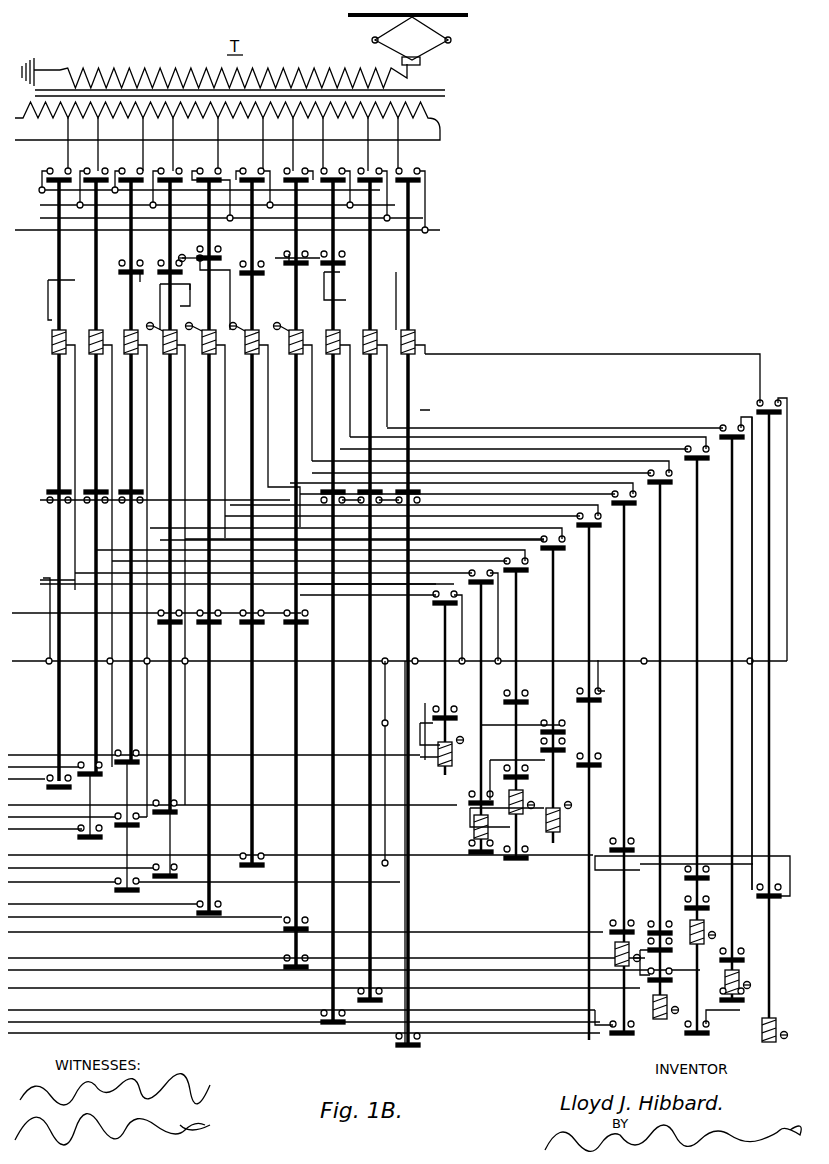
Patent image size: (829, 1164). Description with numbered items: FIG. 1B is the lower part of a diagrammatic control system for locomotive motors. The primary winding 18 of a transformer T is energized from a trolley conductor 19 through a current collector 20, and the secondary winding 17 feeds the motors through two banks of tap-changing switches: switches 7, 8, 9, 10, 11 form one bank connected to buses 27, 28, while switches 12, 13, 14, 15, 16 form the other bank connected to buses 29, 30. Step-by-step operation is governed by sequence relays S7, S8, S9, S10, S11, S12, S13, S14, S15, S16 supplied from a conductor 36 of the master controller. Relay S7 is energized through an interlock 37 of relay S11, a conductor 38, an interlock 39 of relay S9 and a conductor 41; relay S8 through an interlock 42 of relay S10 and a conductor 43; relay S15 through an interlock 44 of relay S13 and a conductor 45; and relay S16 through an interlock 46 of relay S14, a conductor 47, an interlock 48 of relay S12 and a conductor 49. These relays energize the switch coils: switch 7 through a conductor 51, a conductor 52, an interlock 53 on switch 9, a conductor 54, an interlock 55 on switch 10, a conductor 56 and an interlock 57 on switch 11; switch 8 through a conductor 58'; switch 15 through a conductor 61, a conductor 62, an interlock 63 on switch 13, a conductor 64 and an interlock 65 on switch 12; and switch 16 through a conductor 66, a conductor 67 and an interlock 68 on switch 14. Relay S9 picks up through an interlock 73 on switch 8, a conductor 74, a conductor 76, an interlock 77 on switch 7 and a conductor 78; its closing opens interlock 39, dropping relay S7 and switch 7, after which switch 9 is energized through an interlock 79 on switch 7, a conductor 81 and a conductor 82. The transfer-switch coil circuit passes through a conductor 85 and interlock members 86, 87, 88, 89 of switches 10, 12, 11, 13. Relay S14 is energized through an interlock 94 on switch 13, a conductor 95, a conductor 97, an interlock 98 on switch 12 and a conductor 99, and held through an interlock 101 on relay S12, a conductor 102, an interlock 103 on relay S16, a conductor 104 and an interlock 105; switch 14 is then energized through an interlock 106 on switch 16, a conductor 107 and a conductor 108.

The tap-changing switch 7 is at (44, 392).
The tap-changing switch 8 is at (90, 392).
The tap-changing switch 9 is at (126, 392).
The tap-changing switch 10 is at (166, 392).
The tap-changing switch 11 is at (250, 392).
The tap-changing switch 12 is at (205, 392).
The tap-changing switch 13 is at (294, 392).
The tap-changing switch 14 is at (328, 384).
The tap-changing switch 15 is at (367, 384).
The tap-changing switch 16 is at (405, 384).
The secondary winding 17 is at (226, 118).
The primary winding 18 is at (263, 76).
The trolley conductor 19 is at (456, 18).
The current collector 20 is at (422, 62).
The bus 27 is at (198, 185).
The bus 28 is at (205, 200).
The bus 29 is at (219, 214).
The bus 30 is at (20, 232).
The conductor 36 is at (425, 412).
The interlock 37 is at (607, 678).
The conductor 38 is at (572, 708).
The interlock 39 is at (490, 726).
The conductor 41 is at (214, 746).
The interlock 42 is at (545, 744).
The conductor 43 is at (232, 796).
The interlock 44 is at (666, 970).
The conductor 45 is at (448, 952).
The interlock 46 is at (712, 1035).
The conductor 47 is at (652, 1040).
The interlock 48 is at (618, 990).
The conductor 49 is at (454, 1001).
The conductor 51 is at (381, 676).
The conductor 52 is at (48, 298).
The interlock 53 is at (124, 266).
The conductor 54 is at (163, 266).
The interlock 55 is at (188, 255).
The conductor 56 is at (189, 286).
The interlock 57 is at (240, 274).
The conductor 58' is at (286, 711).
The conductor 61 is at (569, 707).
The conductor 62 is at (358, 290).
The interlock 63 is at (289, 254).
The conductor 64 is at (284, 258).
The interlock 65 is at (214, 254).
The conductor 66 is at (606, 690).
The conductor 67 is at (408, 296).
The interlock 68 is at (338, 258).
The interlock 73 is at (85, 768).
The conductor 74 is at (45, 761).
The conductor 76 is at (26, 775).
The interlock 77 is at (46, 790).
The conductor 78 is at (121, 792).
The interlock 79 is at (50, 490).
The conductor 81 is at (352, 546).
The conductor 82 is at (349, 562).
The conductor 85 is at (156, 603).
The interlock member 86 is at (163, 628).
The interlock member 87 is at (203, 628).
The interlock member 88 is at (245, 628).
The interlock member 89 is at (286, 628).
The interlock 94 is at (282, 931).
The conductor 95 is at (145, 913).
The conductor 97 is at (102, 891).
The interlock 98 is at (200, 910).
The conductor 99 is at (252, 878).
The interlock 101 is at (618, 850).
The conductor 102 is at (701, 869).
The interlock 103 is at (766, 904).
The conductor 104 is at (712, 898).
The interlock 105 is at (690, 890).
The interlock 106 is at (418, 400).
The conductor 107 is at (500, 424).
The conductor 108 is at (556, 424).
The sequence relay S7 is at (430, 696).
The sequence relay S8 is at (467, 696).
The sequence relay S9 is at (503, 696).
The sequence relay S10 is at (545, 696).
The sequence relay S11 is at (584, 629).
The sequence relay S12 is at (621, 629).
The sequence relay S13 is at (657, 629).
The sequence relay S14 is at (694, 629).
The sequence relay S15 is at (729, 629).
The sequence relay S16 is at (768, 697).